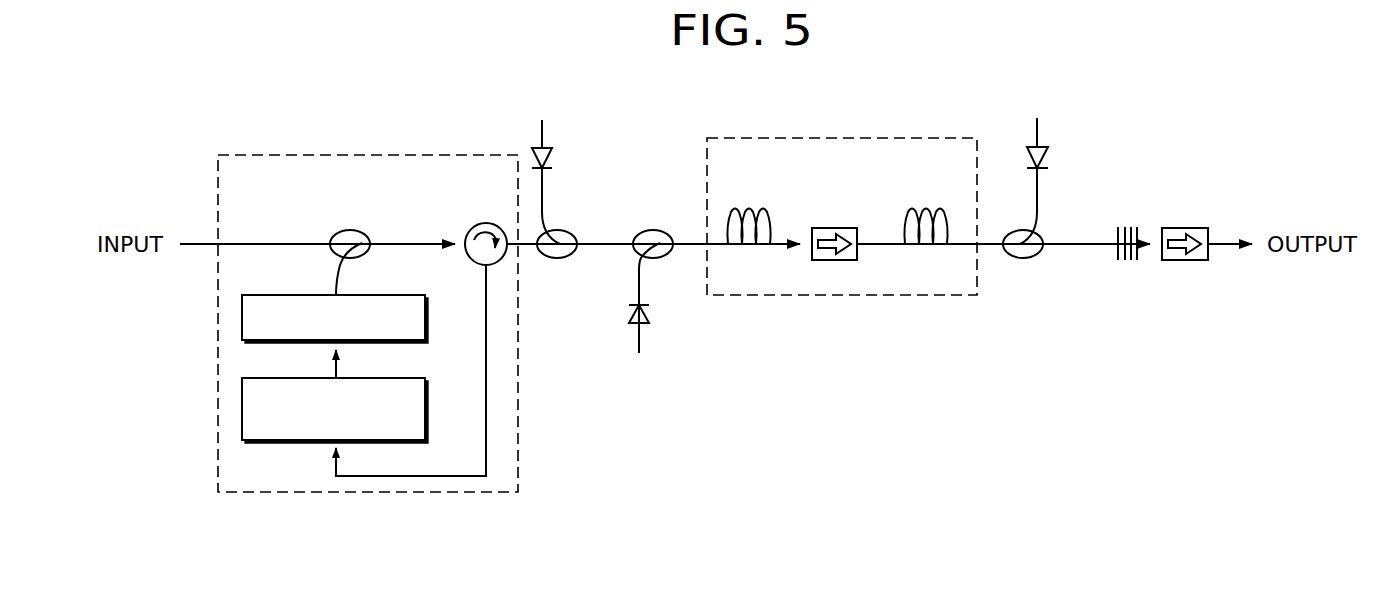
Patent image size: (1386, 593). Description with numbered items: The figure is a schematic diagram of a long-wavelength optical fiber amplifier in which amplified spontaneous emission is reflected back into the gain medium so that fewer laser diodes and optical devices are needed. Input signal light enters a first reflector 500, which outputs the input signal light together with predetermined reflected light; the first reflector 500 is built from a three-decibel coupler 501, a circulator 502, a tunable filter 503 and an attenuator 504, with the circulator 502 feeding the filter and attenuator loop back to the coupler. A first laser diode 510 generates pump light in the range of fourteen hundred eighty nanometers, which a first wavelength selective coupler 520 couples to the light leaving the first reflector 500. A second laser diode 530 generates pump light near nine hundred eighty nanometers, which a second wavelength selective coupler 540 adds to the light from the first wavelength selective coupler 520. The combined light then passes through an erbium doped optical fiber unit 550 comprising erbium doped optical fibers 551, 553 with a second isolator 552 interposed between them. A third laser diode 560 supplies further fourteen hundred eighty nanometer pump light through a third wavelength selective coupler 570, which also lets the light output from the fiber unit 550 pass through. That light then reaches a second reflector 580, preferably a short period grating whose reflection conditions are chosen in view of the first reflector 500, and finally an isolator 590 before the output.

The first reflector 500 is at (374, 155).
The 3 dB coupler 501 is at (350, 230).
The circulator 502 is at (486, 222).
The tunable filter 503 is at (242, 412).
The attenuator 504 is at (242, 318).
The first laser diode 510 is at (560, 155).
The first wavelength selective coupler 520 is at (557, 258).
The second laser diode 530 is at (628, 311).
The second wavelength selective coupler 540 is at (653, 229).
The erbium doped optical fiber unit 550 is at (906, 138).
The erbium doped optical fiber 551 is at (771, 206).
The second isolator 552 is at (833, 228).
The erbium doped optical fiber 553 is at (926, 206).
The third laser diode 560 is at (1054, 158).
The third wavelength selective coupler 570 is at (1023, 258).
The second reflector 580 is at (1117, 258).
The isolator 590 is at (1182, 228).